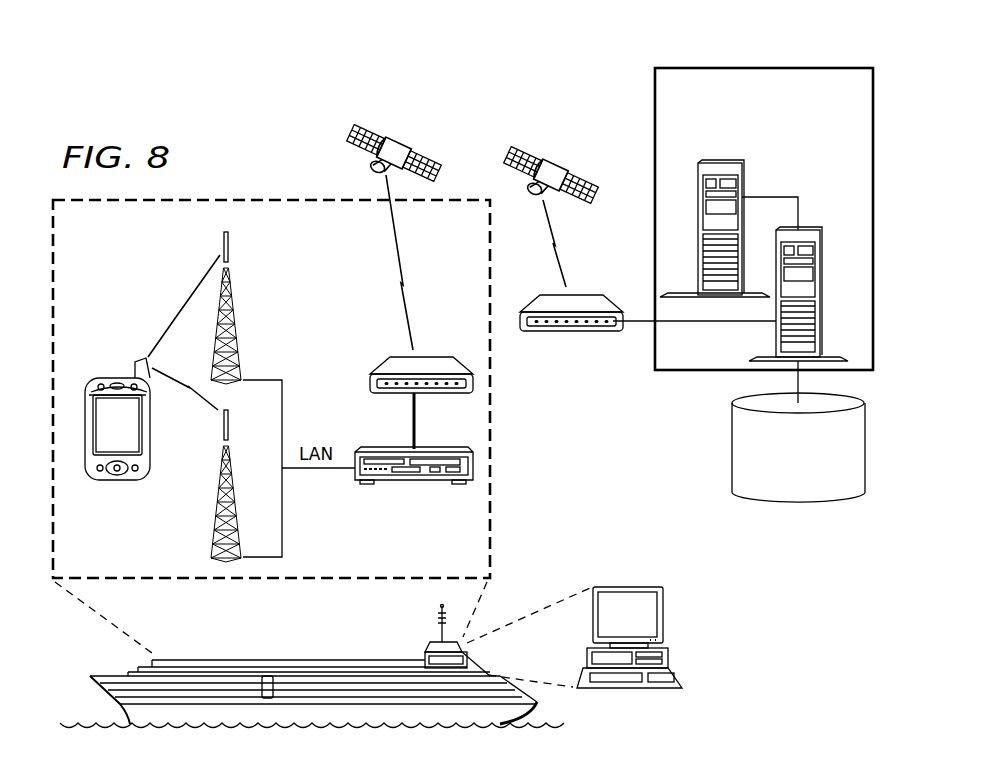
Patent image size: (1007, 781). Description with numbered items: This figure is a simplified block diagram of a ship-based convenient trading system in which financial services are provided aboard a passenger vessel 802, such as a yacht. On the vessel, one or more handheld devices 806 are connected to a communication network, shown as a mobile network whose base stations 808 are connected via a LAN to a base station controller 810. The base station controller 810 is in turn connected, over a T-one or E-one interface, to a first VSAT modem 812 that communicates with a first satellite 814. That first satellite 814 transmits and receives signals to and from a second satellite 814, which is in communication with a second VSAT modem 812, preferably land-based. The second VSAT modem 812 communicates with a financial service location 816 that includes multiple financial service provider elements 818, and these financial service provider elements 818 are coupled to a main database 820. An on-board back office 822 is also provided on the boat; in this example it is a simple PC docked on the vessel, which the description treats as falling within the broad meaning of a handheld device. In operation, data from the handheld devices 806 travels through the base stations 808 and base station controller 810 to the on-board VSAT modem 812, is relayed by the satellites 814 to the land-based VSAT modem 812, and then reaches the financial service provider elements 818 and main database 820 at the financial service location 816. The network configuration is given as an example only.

The passenger vessel 802 is at (259, 660).
The handheld device 806 is at (118, 378).
The base station 808 is at (238, 316).
The base station controller 810 is at (428, 485).
The VSAT modem 812 is at (429, 358).
The satellite 814 is at (406, 142).
The financial service location 816 is at (776, 64).
The financial service provider element 818 is at (744, 176).
The main database 820 is at (806, 502).
The on-board back office 822 is at (636, 587).